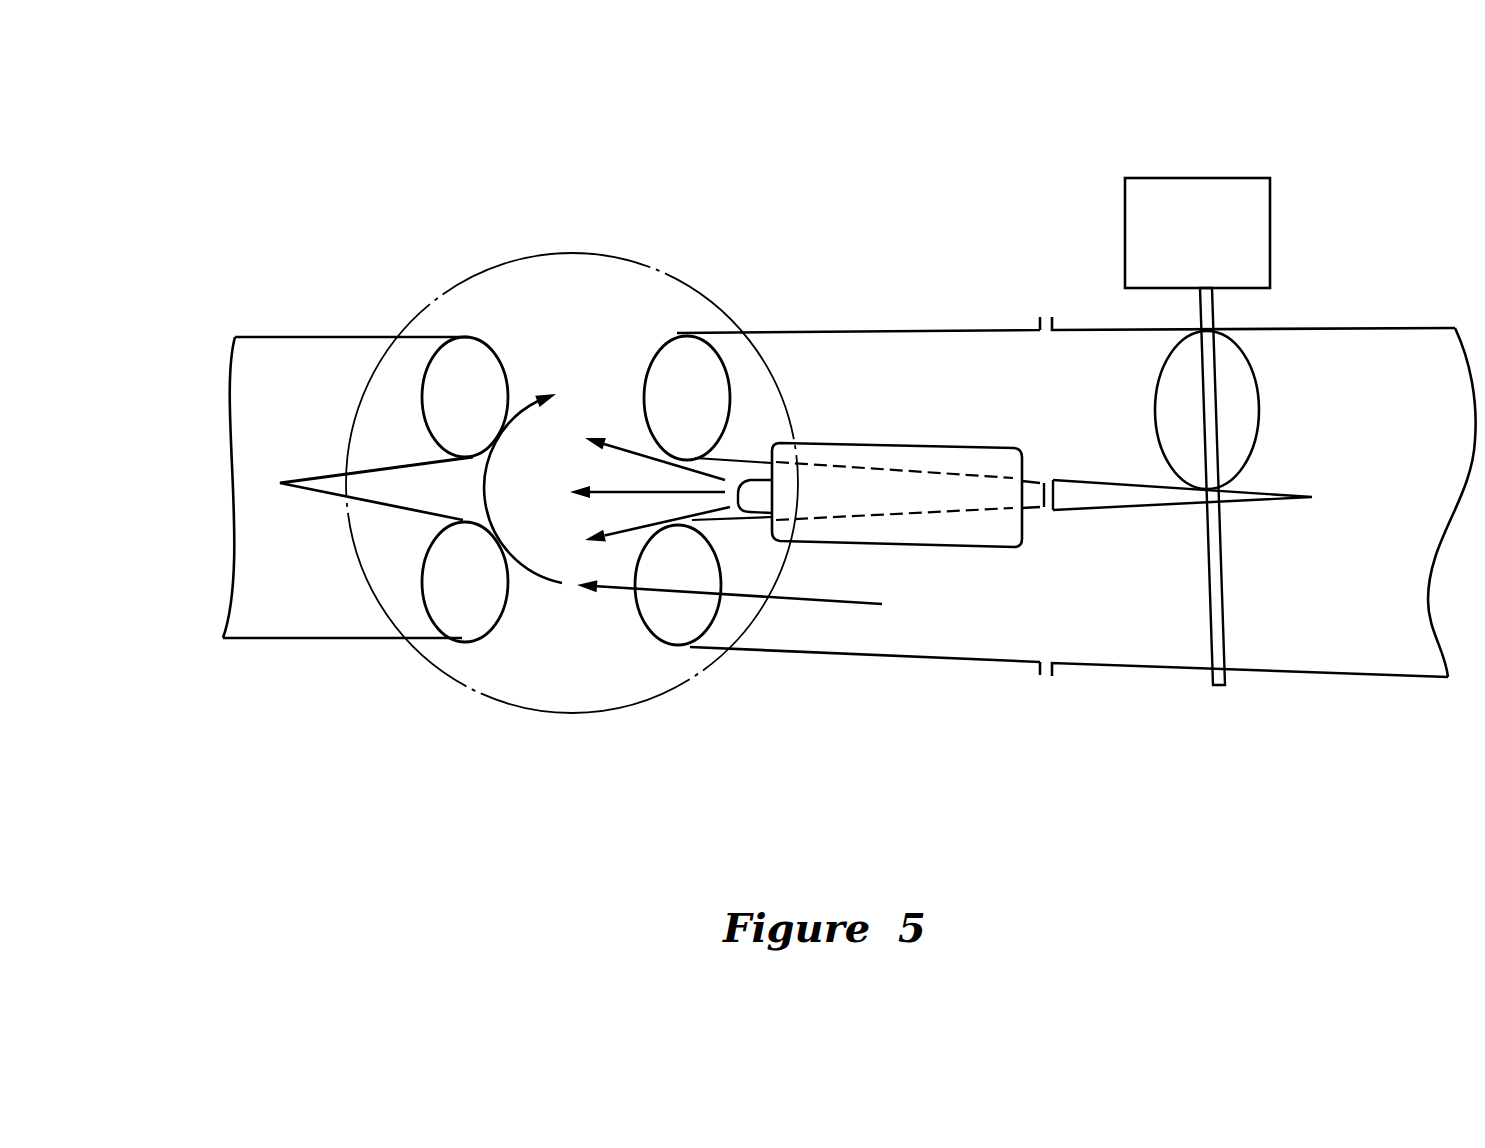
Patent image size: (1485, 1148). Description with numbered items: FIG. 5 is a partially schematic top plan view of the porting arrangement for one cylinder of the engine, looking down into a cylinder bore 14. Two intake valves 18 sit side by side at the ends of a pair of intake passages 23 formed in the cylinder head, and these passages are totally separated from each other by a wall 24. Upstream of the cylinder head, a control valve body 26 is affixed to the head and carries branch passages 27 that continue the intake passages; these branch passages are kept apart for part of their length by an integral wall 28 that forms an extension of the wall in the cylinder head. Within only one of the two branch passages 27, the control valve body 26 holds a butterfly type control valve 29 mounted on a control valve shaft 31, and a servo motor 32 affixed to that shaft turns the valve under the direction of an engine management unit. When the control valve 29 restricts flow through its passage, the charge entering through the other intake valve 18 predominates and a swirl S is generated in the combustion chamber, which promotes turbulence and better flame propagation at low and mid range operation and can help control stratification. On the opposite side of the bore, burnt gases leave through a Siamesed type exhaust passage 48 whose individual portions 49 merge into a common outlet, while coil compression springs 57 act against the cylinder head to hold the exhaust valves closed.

The cylinder bore 14 is at (605, 260).
The intake valves 18 is at (693, 372).
The intake passages 23 is at (887, 360).
The wall 24 is at (805, 457).
The control valve body 26 is at (1076, 497).
The branch passages 27 is at (1100, 362).
The integral wall 28 is at (1110, 507).
The butterfly type control valve 29 is at (1253, 399).
The control valve shaft 31 is at (1223, 617).
The servo motor 32 is at (1217, 198).
The Siamesed type exhaust passage 48 is at (311, 475).
The individual portions 49 is at (340, 353).
The coil compression spring 57 is at (255, 535).
The swirl S is at (497, 497).